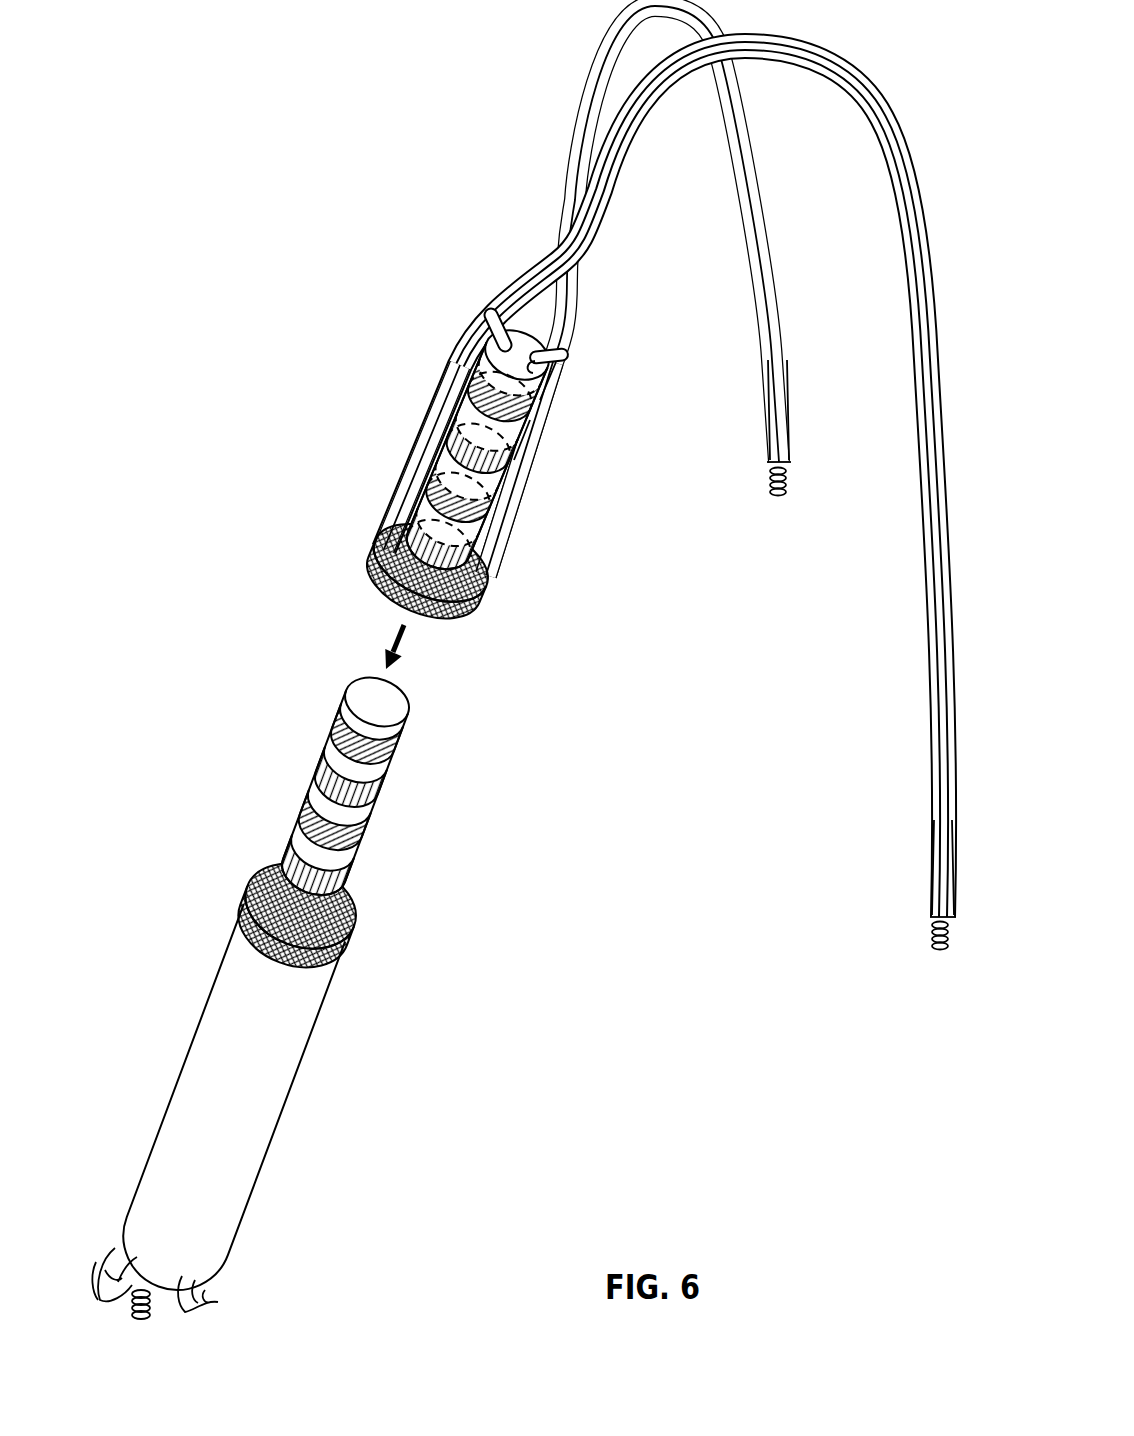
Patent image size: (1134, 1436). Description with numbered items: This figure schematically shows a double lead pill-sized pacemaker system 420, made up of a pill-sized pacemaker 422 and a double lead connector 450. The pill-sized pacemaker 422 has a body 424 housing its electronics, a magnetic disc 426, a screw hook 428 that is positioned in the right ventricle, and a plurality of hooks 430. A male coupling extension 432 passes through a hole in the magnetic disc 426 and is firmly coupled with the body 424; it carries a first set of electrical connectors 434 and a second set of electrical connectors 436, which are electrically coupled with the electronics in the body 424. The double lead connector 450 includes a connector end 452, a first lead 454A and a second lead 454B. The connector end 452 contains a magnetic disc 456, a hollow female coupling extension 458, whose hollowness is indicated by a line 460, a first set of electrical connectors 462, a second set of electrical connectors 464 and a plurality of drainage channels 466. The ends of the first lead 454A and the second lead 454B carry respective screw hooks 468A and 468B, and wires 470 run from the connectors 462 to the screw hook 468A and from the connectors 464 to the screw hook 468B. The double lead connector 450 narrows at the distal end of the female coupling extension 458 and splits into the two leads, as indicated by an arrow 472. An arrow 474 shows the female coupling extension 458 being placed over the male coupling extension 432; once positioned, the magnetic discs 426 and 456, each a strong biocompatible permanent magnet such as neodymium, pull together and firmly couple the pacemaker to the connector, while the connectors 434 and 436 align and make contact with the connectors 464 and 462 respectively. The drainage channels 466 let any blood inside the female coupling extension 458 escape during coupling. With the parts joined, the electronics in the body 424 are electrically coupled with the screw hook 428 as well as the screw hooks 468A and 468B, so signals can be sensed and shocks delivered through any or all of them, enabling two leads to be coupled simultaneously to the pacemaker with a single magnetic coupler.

The double lead pill-sized pacemaker system 420 is at (210, 42).
The pill-sized pacemaker 422 is at (130, 1021).
The body 424 is at (235, 1118).
The magnetic disc 426 is at (330, 948).
The screw hook 428 is at (140, 1320).
The plurality of hooks 430 is at (100, 1265).
The male coupling extension 432 is at (290, 850).
The first set of electrical connectors 434 is at (362, 800).
The second set of electrical connectors 436 is at (394, 757).
The double lead connector 450 is at (388, 270).
The connector end 452 is at (447, 372).
The first lead 454A is at (575, 63).
The second lead 454B is at (888, 118).
The magnetic disc 456 is at (385, 575).
The female coupling extension 458 is at (500, 490).
The line 460 is at (455, 540).
The first set of electrical connectors 462 is at (480, 392).
The second set of electrical connectors 464 is at (497, 467).
The plurality of drainage channels 466 is at (501, 314).
The screw hook 468A is at (931, 936).
The screw hook 468B is at (782, 495).
The wires 470 is at (548, 385).
The arrow 472 is at (605, 229).
The arrow 474 is at (412, 640).